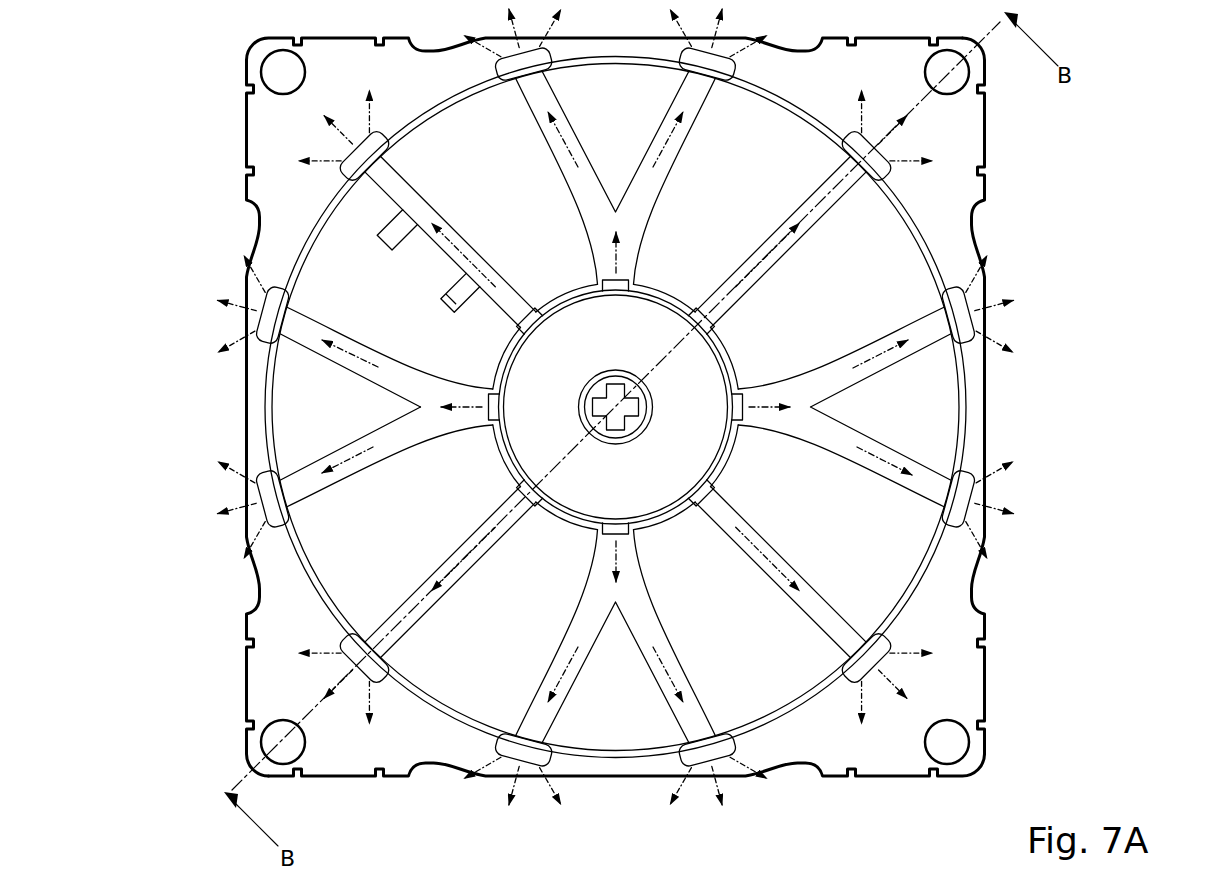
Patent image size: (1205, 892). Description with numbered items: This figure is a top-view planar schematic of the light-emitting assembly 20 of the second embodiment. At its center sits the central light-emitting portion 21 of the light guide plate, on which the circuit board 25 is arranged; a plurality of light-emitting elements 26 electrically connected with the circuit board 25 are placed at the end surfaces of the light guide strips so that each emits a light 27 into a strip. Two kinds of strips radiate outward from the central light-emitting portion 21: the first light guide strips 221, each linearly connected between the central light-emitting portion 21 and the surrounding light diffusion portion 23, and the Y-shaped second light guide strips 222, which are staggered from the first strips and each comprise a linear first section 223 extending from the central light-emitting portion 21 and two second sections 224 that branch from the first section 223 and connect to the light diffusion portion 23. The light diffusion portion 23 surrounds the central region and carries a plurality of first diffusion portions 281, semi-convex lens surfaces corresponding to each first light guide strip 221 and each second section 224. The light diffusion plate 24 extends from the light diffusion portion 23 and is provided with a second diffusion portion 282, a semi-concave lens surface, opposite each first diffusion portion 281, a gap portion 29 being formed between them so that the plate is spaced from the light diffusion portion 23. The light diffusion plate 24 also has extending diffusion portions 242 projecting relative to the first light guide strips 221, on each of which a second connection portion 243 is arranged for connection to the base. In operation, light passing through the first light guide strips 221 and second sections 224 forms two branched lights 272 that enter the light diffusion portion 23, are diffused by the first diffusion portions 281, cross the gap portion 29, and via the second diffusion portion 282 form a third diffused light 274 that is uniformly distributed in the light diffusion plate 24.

The light-emitting assembly 20 is at (1173, 107).
The central light-emitting portion 21 is at (668, 516).
The first light guide strips 221 is at (377, 633).
The second light guide strips 222 is at (124, 312).
The first section 223 is at (460, 393).
The second sections 224 is at (387, 437).
The light diffusion portion 23 is at (314, 210).
The light diffusion plate 24 is at (998, 617).
The extending diffusion portions 242 is at (940, 688).
The second connection portion 243 is at (967, 745).
The circuit board 25 is at (503, 443).
The light-emitting elements 26 is at (510, 497).
The light 27 is at (805, 386).
The branched lights 272 is at (895, 427).
The third diffused light 274 is at (905, 163).
The first diffusion portions 281 is at (485, 391).
The second diffusion portion 282 is at (968, 503).
The gap portion 29 is at (968, 490).